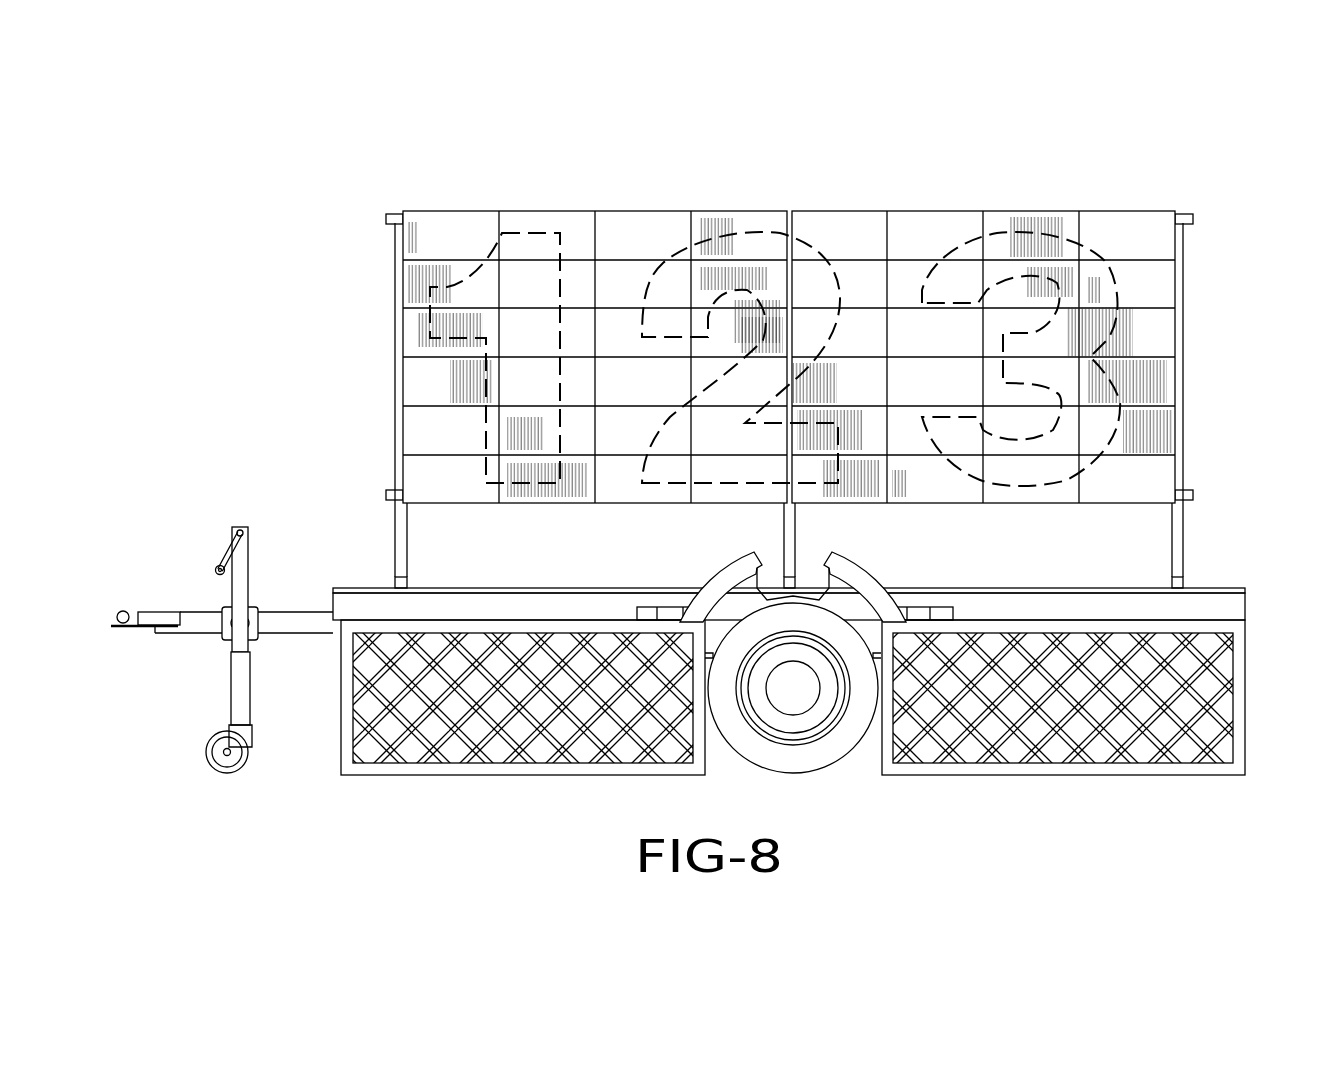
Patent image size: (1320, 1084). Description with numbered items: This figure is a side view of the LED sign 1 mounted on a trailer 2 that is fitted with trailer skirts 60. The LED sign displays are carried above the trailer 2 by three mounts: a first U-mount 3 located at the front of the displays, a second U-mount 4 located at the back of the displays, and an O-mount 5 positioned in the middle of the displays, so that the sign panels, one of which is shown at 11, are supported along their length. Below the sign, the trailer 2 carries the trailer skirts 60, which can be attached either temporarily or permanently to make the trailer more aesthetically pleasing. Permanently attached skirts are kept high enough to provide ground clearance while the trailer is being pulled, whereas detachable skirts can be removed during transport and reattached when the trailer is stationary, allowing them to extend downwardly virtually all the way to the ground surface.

The LED sign 1 is at (740, 305).
The sign panel 11 is at (428, 368).
The trailer 2 is at (191, 610).
The first U-mount 3 is at (410, 526).
The second U-mount 4 is at (1168, 526).
The O-mount 5 is at (797, 521).
The trailer skirts 60 is at (475, 773).